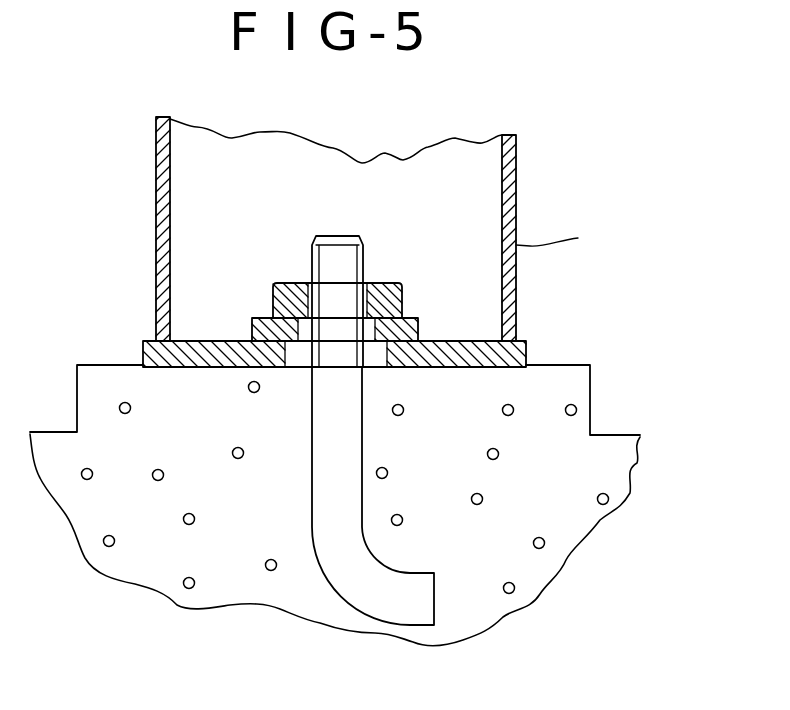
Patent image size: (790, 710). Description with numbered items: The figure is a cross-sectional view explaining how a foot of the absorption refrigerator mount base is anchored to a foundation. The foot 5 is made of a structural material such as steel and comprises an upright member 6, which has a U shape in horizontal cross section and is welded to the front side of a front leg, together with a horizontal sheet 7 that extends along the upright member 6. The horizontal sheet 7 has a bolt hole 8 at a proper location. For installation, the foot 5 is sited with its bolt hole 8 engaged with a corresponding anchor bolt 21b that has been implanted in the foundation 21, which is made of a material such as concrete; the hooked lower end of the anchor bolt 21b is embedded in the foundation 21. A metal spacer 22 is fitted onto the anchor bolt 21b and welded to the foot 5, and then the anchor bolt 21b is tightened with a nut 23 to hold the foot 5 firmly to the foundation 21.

The foot 5 is at (525, 162).
The upright member 6 is at (560, 225).
The horizontal sheet 7 is at (526, 346).
The bolt hole 8 is at (410, 369).
The foundation 21 is at (576, 386).
The anchor bolt 21b is at (340, 573).
The spacer 22 is at (421, 334).
The nut 23 is at (273, 298).